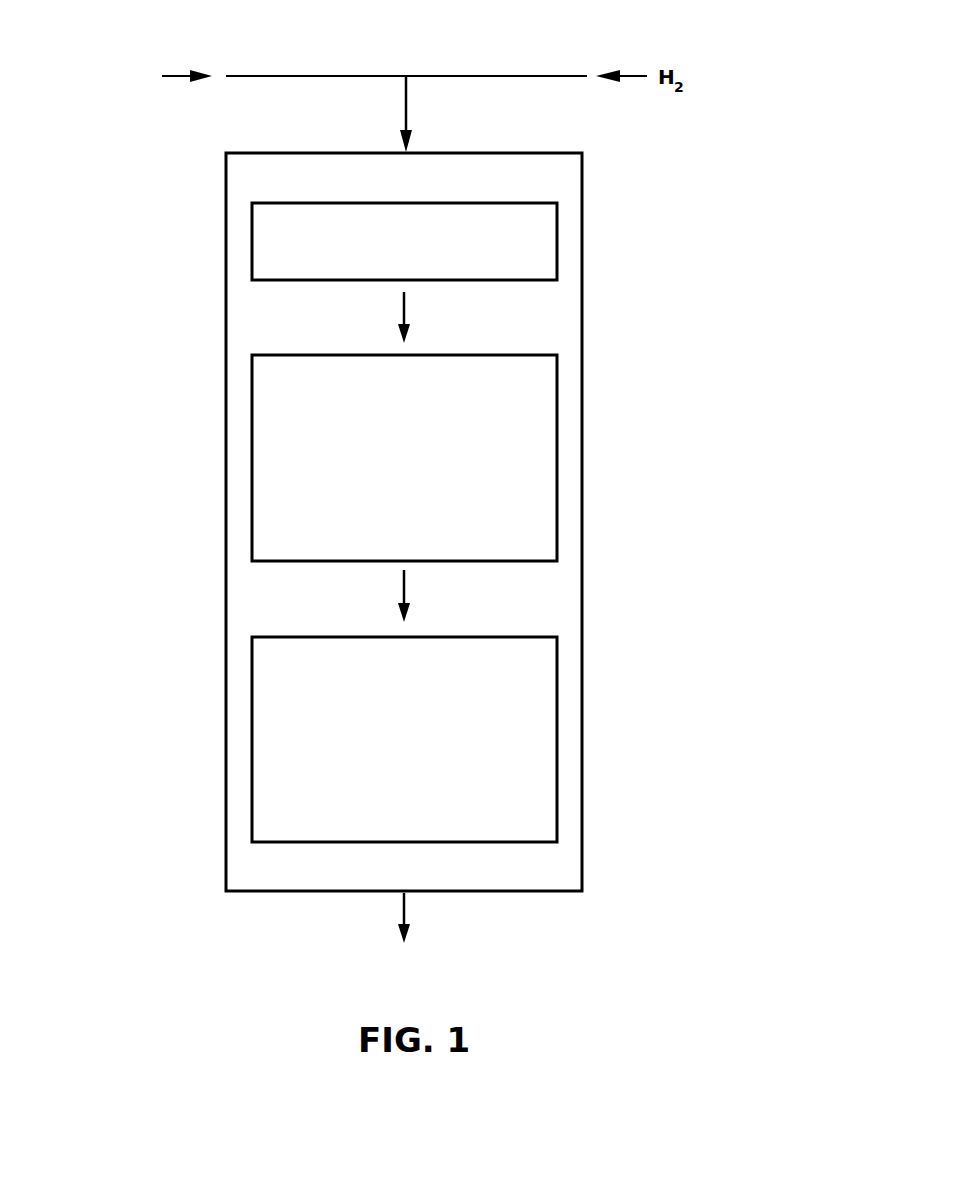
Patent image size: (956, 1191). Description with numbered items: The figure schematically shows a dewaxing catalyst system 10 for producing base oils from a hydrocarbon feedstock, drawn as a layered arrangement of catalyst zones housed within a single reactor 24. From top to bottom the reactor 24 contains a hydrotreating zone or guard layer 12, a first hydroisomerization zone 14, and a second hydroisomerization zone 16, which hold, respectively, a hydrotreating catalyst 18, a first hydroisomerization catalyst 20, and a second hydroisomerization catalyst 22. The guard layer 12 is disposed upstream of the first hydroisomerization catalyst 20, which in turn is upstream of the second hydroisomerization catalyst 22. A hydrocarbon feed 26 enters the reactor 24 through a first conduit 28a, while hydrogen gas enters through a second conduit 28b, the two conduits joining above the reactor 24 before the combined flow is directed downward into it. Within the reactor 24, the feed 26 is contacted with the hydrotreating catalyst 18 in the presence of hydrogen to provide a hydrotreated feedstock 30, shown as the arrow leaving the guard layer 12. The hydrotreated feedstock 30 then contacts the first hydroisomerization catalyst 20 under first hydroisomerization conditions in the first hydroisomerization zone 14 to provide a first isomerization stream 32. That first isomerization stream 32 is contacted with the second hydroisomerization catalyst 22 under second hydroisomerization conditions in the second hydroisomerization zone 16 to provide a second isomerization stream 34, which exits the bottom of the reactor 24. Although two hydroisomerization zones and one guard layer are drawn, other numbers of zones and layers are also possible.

The dewaxing catalyst system 10 is at (550, 522).
The guard layer 12 is at (490, 241).
The first hydroisomerization zone 14 is at (490, 458).
The second hydroisomerization zone 16 is at (497, 739).
The hydrotreating catalyst 18 is at (404, 241).
The first hydroisomerization catalyst 20 is at (404, 458).
The second hydroisomerization catalyst 22 is at (404, 739).
The reactor 24 is at (226, 573).
The hydrocarbon feed 26 is at (176, 76).
The first conduit 28a is at (330, 76).
The second conduit 28b is at (483, 76).
The hydrotreated feedstock 30 is at (423, 317).
The first isomerization stream 32 is at (423, 596).
The second isomerization stream 34 is at (423, 918).